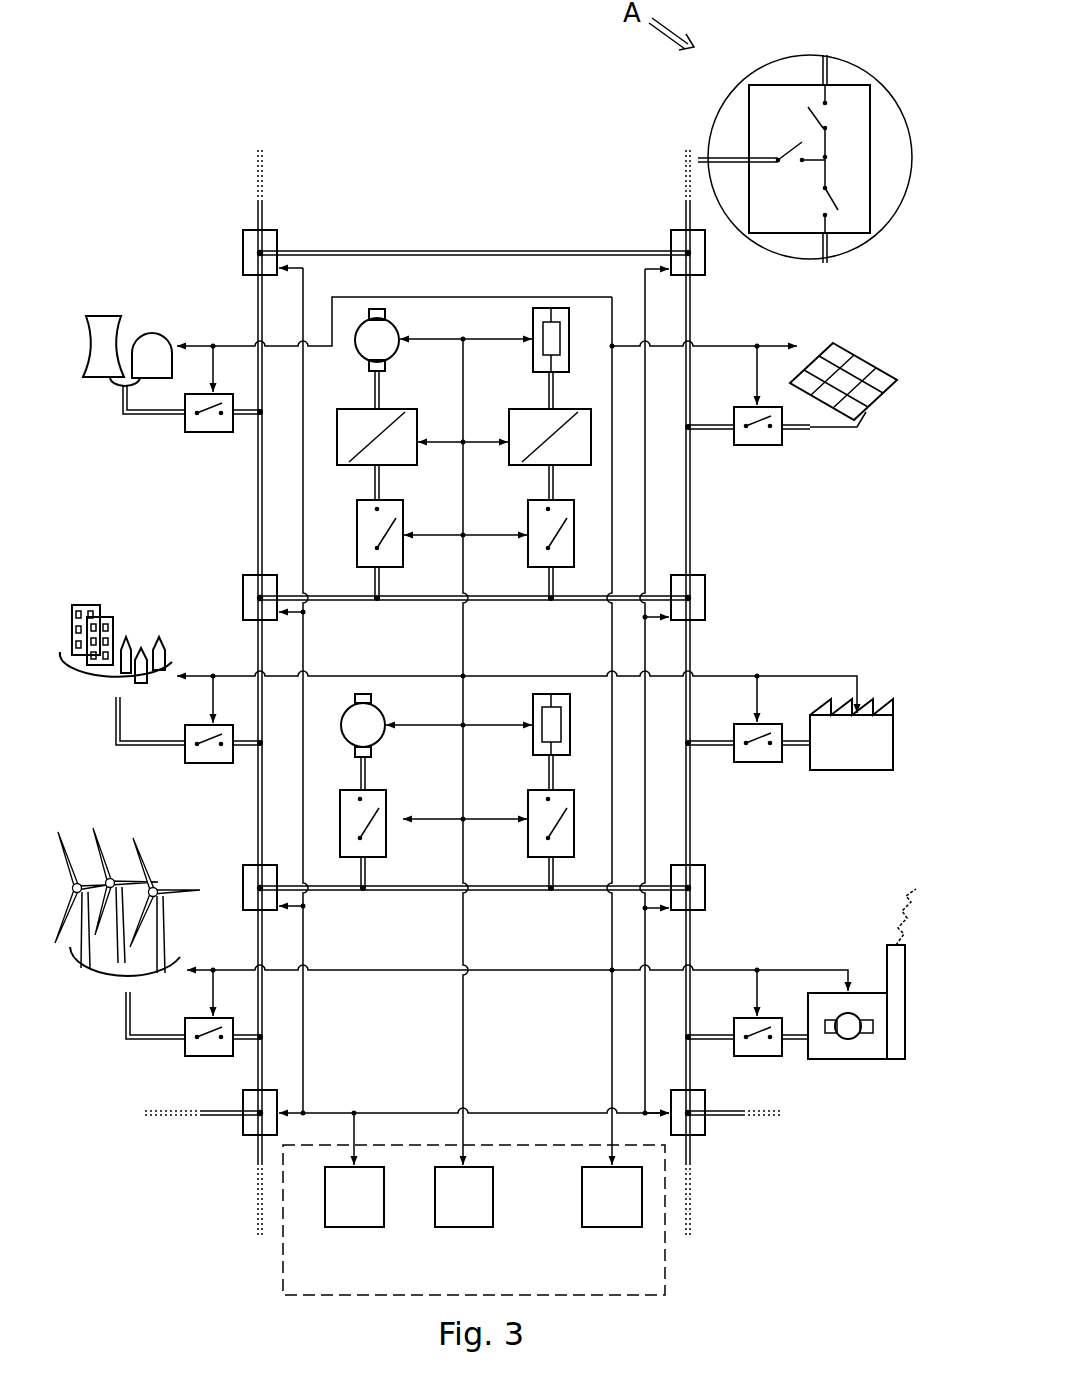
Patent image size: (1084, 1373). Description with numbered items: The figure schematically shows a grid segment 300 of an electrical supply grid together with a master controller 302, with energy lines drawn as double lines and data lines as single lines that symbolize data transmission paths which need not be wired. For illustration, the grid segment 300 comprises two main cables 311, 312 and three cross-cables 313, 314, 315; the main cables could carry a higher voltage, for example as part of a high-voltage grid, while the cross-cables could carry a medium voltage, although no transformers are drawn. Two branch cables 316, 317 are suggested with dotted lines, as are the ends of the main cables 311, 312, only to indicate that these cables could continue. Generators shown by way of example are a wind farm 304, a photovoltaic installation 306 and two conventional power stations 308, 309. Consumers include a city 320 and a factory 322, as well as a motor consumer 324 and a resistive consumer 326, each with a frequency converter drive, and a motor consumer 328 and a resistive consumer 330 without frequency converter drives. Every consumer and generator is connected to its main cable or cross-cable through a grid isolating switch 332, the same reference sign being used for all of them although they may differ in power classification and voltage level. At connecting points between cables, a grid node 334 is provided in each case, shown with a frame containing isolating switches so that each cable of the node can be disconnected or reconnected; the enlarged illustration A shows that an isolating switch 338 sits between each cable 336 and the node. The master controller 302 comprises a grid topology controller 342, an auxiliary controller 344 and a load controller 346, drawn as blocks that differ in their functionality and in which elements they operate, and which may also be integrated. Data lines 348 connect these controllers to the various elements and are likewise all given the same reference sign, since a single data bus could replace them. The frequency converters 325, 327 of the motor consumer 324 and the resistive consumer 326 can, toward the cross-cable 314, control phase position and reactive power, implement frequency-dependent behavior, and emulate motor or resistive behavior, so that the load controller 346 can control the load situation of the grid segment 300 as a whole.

The grid segment 300 is at (315, 118).
The master controller 302 is at (690, 1248).
The wind farm 304 is at (112, 815).
The photovoltaic installation 306 is at (850, 338).
The conventional power station 308 is at (870, 1068).
The conventional power station 309 is at (130, 282).
The main cable 311 is at (255, 505).
The main cable 312 is at (692, 528).
The cross-cable 313 is at (358, 250).
The cross-cable 314 is at (372, 596).
The cross-cable 315 is at (385, 886).
The branch cable 316 is at (210, 1117).
The branch cable 317 is at (735, 1118).
The city 320 is at (110, 582).
The factory 322 is at (900, 740).
The motor consumer 324 is at (400, 325).
The frequency converter 325 is at (385, 410).
The resistive consumer 326 is at (530, 316).
The frequency converter 327 is at (508, 418).
The motor consumer 328 is at (365, 690).
The resistive consumer 330 is at (553, 687).
The grid isolating switch 332 is at (185, 425).
The grid node 334 is at (277, 228).
The cable 336 is at (700, 155).
The isolating switch 338 is at (803, 107).
The grid topology controller 342 is at (372, 1229).
The auxiliary controller 344 is at (620, 1229).
The load controller 346 is at (480, 1229).
The data line 348 is at (305, 1027).